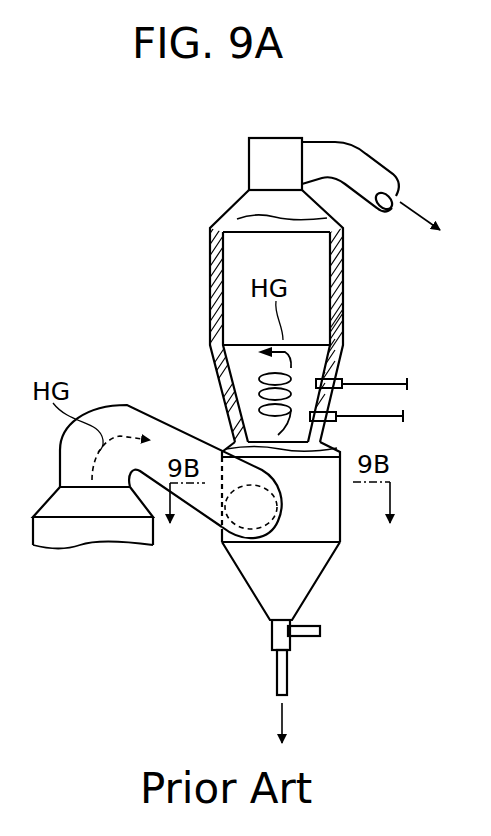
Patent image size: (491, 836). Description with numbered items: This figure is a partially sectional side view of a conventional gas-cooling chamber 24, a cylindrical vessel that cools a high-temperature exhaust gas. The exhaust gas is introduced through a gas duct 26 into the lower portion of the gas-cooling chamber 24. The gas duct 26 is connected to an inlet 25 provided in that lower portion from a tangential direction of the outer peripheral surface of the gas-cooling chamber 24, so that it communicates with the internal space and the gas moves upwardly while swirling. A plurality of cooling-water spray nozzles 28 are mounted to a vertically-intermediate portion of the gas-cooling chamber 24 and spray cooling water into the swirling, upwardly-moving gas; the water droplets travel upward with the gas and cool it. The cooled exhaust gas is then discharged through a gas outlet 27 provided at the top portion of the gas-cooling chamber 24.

The gas-cooling chamber 24 is at (208, 283).
The inlet 25 is at (215, 536).
The gas duct 26 is at (117, 418).
The gas outlet 27 is at (302, 154).
The cooling-water spray nozzles 28 is at (337, 410).